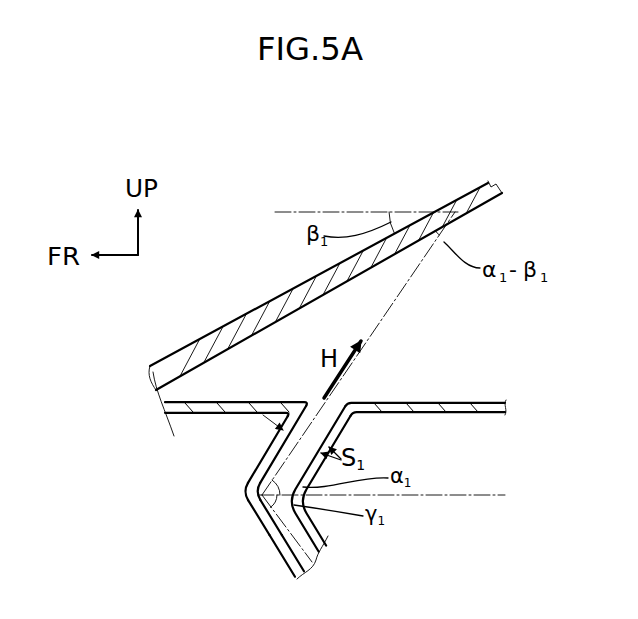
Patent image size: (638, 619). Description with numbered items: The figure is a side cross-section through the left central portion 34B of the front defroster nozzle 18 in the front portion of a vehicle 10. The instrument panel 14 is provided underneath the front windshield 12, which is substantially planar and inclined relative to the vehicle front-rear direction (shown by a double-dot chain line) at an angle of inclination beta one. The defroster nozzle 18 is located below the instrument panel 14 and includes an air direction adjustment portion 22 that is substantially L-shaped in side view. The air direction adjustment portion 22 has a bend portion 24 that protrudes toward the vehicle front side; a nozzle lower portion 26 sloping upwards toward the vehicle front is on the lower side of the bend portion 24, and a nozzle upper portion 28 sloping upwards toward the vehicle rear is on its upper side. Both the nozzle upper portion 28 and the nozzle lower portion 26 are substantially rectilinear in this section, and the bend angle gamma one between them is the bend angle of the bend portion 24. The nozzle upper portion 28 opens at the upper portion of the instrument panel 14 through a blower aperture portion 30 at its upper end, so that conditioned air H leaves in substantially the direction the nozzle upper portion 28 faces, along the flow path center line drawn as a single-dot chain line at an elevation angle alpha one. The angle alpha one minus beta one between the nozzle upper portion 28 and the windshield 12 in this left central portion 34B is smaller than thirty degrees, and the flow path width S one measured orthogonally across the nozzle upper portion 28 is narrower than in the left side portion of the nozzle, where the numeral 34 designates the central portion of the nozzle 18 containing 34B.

The vehicle 10 is at (320, 181).
The front windshield 12 is at (453, 202).
The instrument panel 14 is at (432, 403).
The front defroster nozzle 18 is at (327, 527).
The air direction adjustment portion 22 is at (140, 452).
The bend portion 24 is at (245, 499).
The nozzle lower portion 26 is at (258, 531).
The nozzle upper portion 28 is at (252, 467).
The blower aperture portion 30 is at (348, 398).
The panel portion 34 is at (238, 570).
The left central portion 34B is at (274, 549).